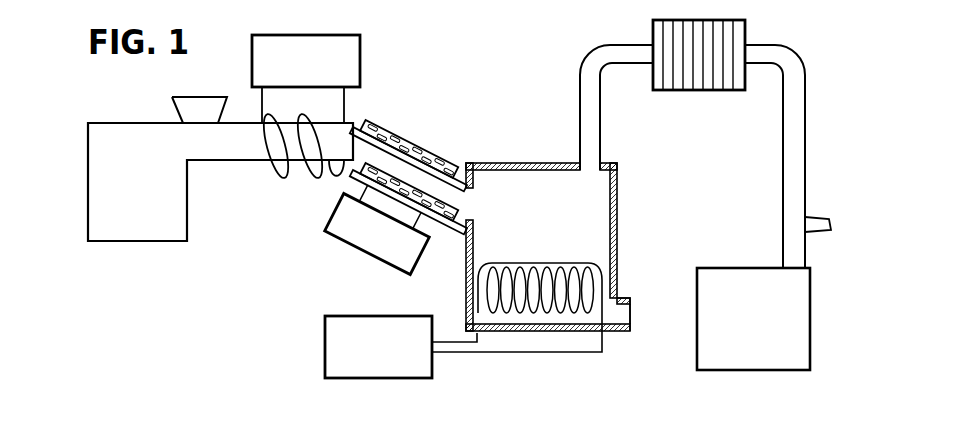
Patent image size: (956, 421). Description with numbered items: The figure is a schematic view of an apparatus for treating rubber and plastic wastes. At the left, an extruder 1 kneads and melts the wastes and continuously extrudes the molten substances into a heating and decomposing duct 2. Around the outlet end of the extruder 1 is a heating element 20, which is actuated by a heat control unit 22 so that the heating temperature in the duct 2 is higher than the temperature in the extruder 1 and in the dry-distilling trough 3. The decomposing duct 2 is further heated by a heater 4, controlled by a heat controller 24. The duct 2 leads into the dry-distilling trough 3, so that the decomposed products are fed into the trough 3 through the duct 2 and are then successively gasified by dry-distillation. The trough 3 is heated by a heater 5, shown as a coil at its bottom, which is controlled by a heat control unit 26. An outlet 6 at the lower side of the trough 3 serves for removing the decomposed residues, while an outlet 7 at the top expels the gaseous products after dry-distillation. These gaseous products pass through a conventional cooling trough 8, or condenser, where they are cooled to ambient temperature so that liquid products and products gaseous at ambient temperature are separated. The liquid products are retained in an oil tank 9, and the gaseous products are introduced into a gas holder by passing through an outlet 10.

The extruder 1 is at (283, 147).
The heating and decomposing duct 2 is at (365, 150).
The dry-distilling trough 3 is at (462, 285).
The heater for heating the decomposing duct 4 is at (420, 152).
The heater for heating the dry-distilling trough 5 is at (504, 353).
The outlet for removing the decomposed residues 6 is at (630, 325).
The outlet for expelling gaseous products 7 is at (590, 163).
The cooling trough 8 is at (718, 80).
The oil tank 9 is at (795, 333).
The outlet for removing the gaseous products 10 is at (813, 229).
The heating element 20 is at (340, 104).
The heat control unit 22 is at (360, 62).
The heat controller 24 is at (340, 220).
The heat control unit 26 is at (325, 330).